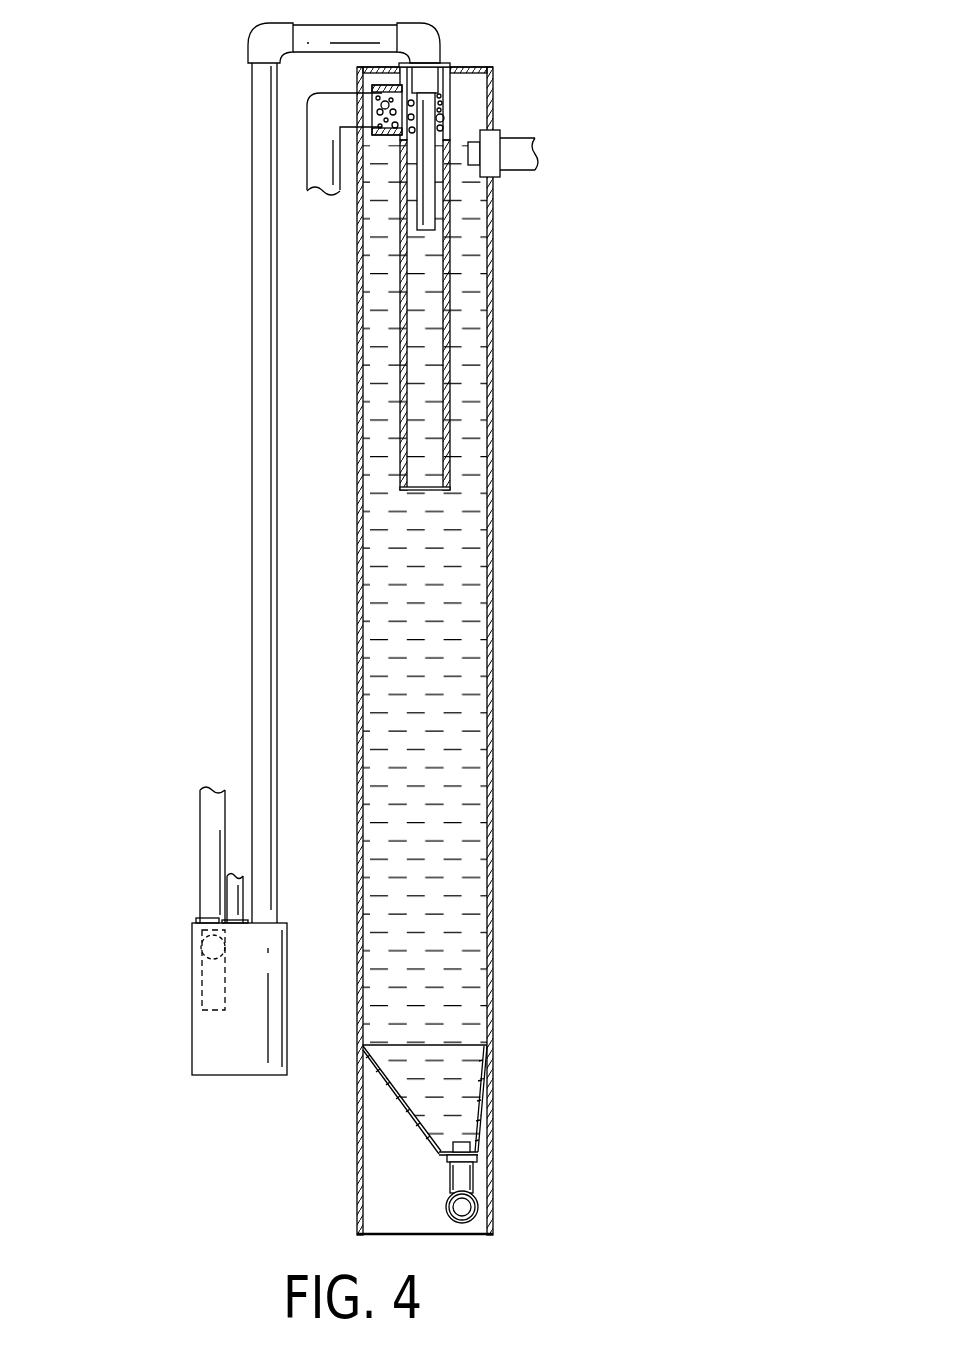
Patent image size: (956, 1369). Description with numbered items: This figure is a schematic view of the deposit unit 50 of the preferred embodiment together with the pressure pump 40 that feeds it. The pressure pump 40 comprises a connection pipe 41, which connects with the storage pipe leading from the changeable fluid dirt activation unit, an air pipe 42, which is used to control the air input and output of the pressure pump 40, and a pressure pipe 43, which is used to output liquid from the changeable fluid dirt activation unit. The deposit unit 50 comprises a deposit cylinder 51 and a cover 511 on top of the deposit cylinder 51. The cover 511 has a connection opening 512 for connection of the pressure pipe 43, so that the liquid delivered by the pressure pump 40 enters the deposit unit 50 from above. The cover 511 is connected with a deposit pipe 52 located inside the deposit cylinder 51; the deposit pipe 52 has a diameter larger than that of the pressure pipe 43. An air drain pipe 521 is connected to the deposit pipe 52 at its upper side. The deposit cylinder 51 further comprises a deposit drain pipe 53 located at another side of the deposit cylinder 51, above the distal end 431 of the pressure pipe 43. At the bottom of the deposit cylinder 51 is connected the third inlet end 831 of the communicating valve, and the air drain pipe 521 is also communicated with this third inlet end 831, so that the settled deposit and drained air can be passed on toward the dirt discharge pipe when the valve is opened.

The pressure pump 40 is at (171, 931).
The connection pipe 41 is at (210, 823).
The air pipe 42 is at (230, 887).
The pressure pipe 43 is at (260, 715).
The distal end 431 is at (428, 218).
The deposit unit 50 is at (391, 617).
The deposit cylinder 51 is at (495, 373).
The cover 511 is at (493, 67).
The connection opening 512 is at (455, 65).
The deposit pipe 52 is at (448, 103).
The air drain pipe 521 is at (315, 173).
The deposit drain pipe 53 is at (518, 162).
The third inlet end 831 is at (477, 1207).